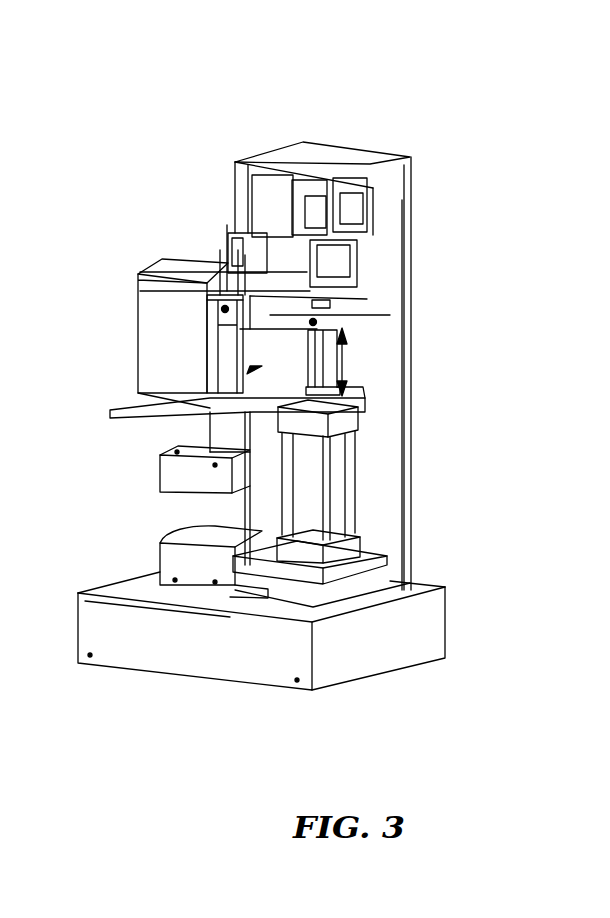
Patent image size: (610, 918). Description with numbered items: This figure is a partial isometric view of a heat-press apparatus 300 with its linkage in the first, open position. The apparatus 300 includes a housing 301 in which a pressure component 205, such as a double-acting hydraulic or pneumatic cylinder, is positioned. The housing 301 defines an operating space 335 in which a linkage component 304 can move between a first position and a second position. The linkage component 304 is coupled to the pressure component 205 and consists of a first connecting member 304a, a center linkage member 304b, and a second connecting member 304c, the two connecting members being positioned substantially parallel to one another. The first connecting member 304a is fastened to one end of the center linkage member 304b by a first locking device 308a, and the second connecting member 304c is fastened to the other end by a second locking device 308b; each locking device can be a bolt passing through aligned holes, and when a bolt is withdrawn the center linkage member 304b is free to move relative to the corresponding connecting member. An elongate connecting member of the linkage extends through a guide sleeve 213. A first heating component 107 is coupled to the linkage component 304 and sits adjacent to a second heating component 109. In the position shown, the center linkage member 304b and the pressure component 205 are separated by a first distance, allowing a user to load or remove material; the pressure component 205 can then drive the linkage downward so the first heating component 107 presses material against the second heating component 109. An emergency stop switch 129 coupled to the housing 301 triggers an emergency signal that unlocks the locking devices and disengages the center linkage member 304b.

The apparatus 300 is at (232, 55).
The housing 301 is at (368, 165).
The linkage component 304 is at (390, 315).
The first connecting member 304a is at (322, 355).
The center linkage member 304b is at (247, 313).
The second connecting member 304c is at (222, 337).
The first locking device 308a is at (313, 322).
The second locking device 308b is at (225, 309).
The operating space 335 is at (250, 369).
The guide sleeve 213 is at (233, 423).
The first heating component 107 is at (202, 477).
The second heating component 109 is at (203, 566).
The pressure component 205 is at (335, 488).
The emergency stop switch 129 is at (240, 597).